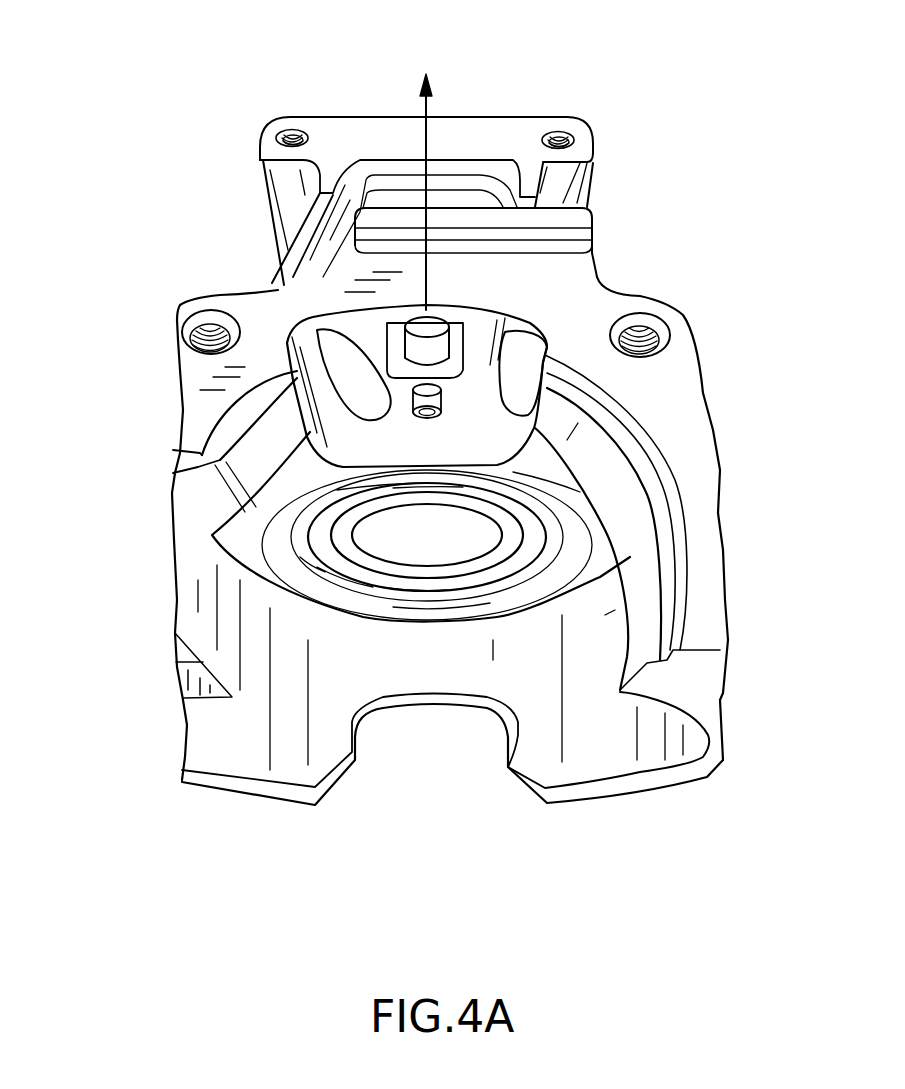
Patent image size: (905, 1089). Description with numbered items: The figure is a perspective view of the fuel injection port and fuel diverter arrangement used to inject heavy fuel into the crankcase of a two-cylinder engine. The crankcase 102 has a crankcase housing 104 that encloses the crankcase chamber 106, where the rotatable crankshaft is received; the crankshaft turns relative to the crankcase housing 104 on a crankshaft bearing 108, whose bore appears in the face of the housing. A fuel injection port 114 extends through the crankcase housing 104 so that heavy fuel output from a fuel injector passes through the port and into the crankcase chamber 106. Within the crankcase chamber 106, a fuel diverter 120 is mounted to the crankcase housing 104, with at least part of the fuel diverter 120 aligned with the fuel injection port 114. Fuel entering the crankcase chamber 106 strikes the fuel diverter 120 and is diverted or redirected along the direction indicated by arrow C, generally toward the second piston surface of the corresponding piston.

The crankcase 102 is at (153, 118).
The crankcase housing 104 is at (710, 417).
The crankcase chamber 106 is at (567, 658).
The crankshaft bearing 108 is at (327, 535).
The fuel injection port 114 is at (437, 334).
The fuel diverter 120 is at (387, 345).
The arrow C is at (430, 163).